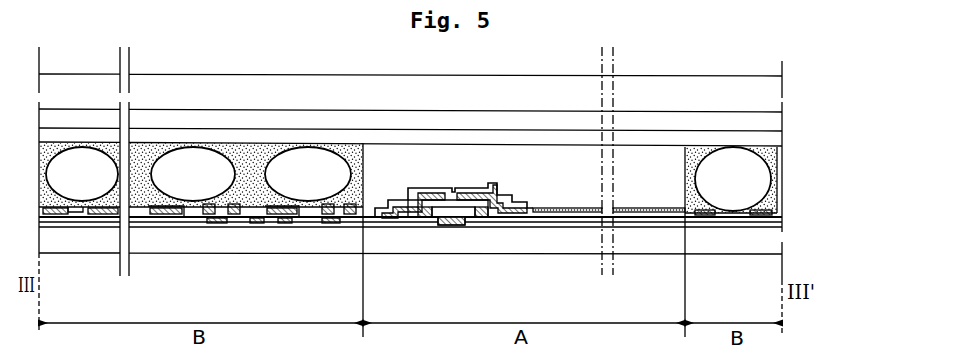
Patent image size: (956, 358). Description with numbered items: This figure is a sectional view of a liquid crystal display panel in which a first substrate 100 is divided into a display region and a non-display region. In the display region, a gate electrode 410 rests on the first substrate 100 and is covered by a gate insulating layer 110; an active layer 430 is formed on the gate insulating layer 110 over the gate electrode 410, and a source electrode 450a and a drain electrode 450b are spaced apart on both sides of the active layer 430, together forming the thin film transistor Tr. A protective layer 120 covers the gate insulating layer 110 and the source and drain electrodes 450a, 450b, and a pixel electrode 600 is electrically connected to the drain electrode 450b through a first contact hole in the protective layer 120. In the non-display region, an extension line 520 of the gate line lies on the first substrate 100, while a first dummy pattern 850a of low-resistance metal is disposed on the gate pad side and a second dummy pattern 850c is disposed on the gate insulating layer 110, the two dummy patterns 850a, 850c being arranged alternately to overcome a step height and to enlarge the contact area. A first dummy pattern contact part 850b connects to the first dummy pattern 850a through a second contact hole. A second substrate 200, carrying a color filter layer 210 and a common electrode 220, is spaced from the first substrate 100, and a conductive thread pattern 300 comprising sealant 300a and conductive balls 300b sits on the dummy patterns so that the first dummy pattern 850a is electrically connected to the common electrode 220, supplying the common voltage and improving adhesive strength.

The first substrate 100 is at (783, 247).
The gate insulating layer 110 is at (783, 228).
The protective layer 120 is at (785, 217).
The second substrate 200 is at (776, 109).
The color filter layer 210 is at (784, 131).
The common electrode 220 is at (783, 146).
The conductive thread pattern 300 is at (460, 178).
The sealant 300a is at (770, 202).
The conductive ball 300b is at (742, 176).
The gate electrode 410 is at (453, 223).
The active layer 430 is at (415, 222).
The source electrode 450a is at (395, 220).
The drain electrode 450b is at (498, 236).
The extension line 520 is at (97, 220).
The pixel electrode 600 is at (578, 220).
The first dummy pattern 850a is at (217, 223).
The first dummy pattern contact part 850b is at (257, 223).
The second dummy pattern 850c is at (284, 223).
The thin film transistor Tr is at (457, 251).